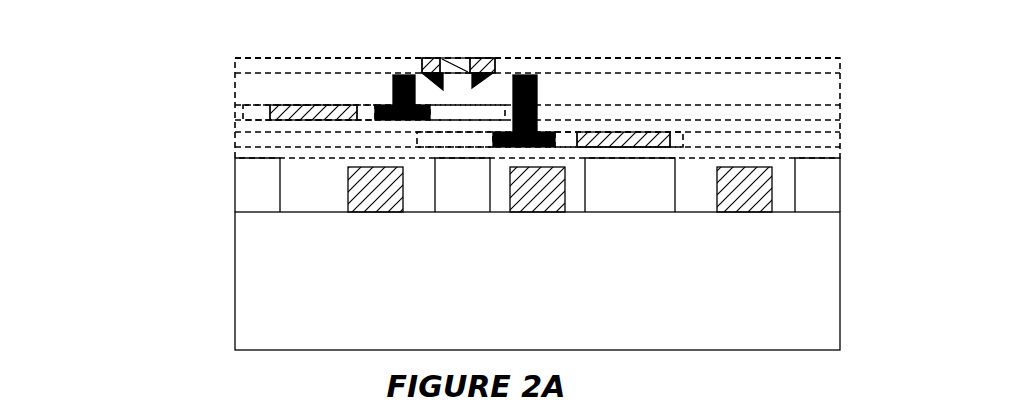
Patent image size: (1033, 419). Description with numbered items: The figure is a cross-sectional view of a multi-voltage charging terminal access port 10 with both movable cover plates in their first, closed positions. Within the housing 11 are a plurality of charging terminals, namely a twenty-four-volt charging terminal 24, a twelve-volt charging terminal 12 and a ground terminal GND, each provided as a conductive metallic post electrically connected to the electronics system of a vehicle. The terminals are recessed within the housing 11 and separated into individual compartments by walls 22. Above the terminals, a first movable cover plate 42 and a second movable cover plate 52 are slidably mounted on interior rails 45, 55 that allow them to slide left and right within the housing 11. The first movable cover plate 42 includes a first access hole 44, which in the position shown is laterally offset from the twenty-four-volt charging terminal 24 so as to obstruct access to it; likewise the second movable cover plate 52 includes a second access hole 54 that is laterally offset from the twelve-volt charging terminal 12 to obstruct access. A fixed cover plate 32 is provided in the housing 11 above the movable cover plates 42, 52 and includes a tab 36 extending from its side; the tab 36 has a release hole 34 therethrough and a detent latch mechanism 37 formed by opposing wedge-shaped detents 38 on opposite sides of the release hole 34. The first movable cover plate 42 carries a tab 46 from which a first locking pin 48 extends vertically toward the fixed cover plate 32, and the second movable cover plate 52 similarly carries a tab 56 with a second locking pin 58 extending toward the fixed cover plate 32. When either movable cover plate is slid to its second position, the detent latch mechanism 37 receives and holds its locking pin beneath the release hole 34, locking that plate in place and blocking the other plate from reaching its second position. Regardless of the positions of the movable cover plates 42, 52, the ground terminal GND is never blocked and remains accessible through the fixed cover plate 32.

The charging terminal access port 10 is at (128, 234).
The housing 11 is at (840, 278).
The walls 22 is at (830, 180).
The 24-volt charging terminal 24 is at (380, 207).
The 12-volt charging terminal 12 is at (528, 207).
The ground terminal GND is at (747, 207).
The fixed cover plate 32 is at (266, 66).
The release hole 34 is at (455, 62).
The tab 36 is at (428, 62).
The detent latch mechanism 37 is at (423, 64).
The wedge-shaped detents 38 is at (485, 62).
The first movable cover plate 42 is at (243, 113).
The first access hole 44 is at (300, 105).
The interior rail 45 is at (838, 110).
The tab 46 is at (387, 105).
The first locking pin 48 is at (395, 75).
The second movable cover plate 52 is at (683, 136).
The second access hole 54 is at (632, 136).
The interior rail 55 is at (838, 138).
The tab 56 is at (548, 128).
The second locking pin 58 is at (540, 118).